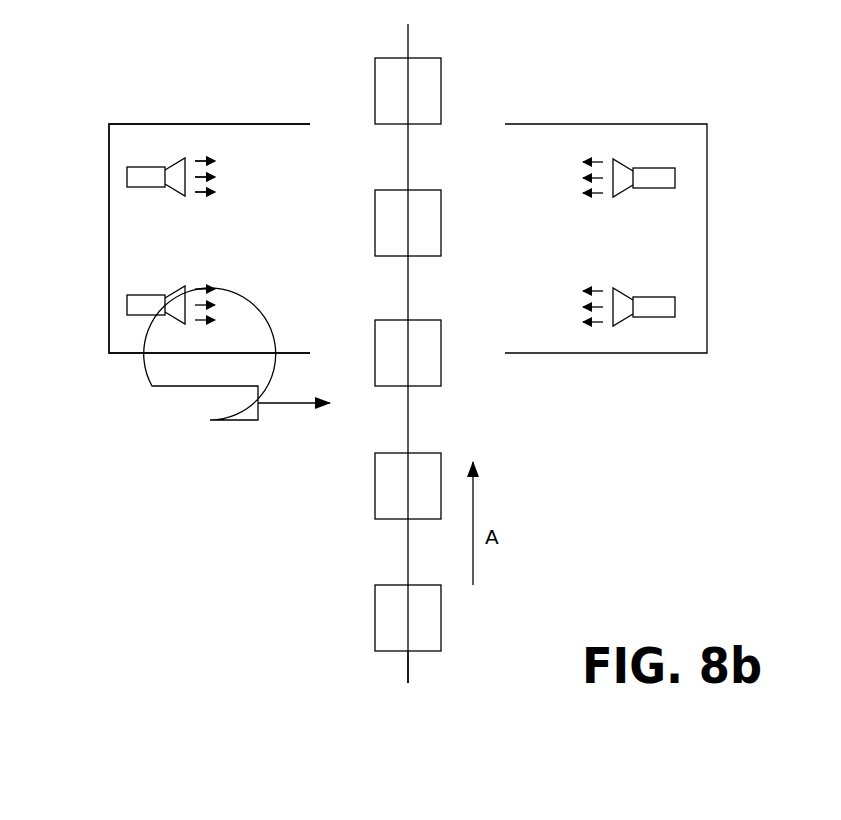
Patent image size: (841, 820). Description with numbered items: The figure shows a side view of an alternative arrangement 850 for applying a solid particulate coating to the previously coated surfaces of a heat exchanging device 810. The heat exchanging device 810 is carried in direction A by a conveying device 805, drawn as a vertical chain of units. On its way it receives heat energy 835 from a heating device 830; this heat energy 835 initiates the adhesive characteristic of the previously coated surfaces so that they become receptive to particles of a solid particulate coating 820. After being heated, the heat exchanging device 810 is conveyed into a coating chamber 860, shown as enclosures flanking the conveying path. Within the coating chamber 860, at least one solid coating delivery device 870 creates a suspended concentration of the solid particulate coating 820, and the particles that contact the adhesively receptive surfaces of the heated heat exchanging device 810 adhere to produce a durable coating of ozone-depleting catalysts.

The conveying device 805 is at (408, 675).
The heat exchanging device 810 is at (398, 57).
The solid particulate coating 820 is at (208, 160).
The heating device 830 is at (151, 518).
The heat energy 835 is at (288, 404).
The drying system 850 is at (86, 48).
The coating chamber 860 is at (168, 123).
The solid coating delivery device 870 is at (127, 181).